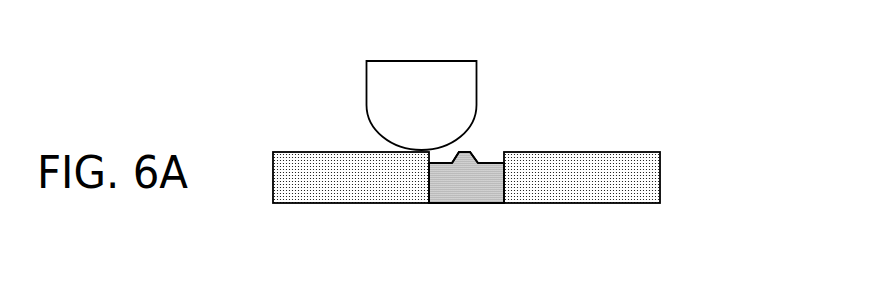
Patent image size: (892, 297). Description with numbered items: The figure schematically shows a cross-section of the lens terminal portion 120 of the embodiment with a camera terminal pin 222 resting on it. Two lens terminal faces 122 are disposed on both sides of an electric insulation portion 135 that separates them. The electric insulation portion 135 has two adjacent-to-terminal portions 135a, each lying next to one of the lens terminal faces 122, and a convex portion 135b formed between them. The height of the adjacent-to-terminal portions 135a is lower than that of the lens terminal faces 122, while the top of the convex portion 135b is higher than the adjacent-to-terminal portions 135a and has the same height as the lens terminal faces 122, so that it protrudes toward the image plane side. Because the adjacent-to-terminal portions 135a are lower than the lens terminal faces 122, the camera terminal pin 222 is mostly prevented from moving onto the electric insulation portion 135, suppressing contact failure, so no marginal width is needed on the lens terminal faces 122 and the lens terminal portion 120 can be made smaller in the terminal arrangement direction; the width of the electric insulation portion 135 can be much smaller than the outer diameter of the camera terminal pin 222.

The lens terminal portion 120 is at (674, 131).
The lens terminal faces 122 is at (287, 152).
The electric insulation portion 135 is at (443, 203).
The adjacent-to-terminal portions 135a is at (445, 166).
The convex portion 135b is at (471, 150).
The camera terminal pin 222 is at (438, 61).